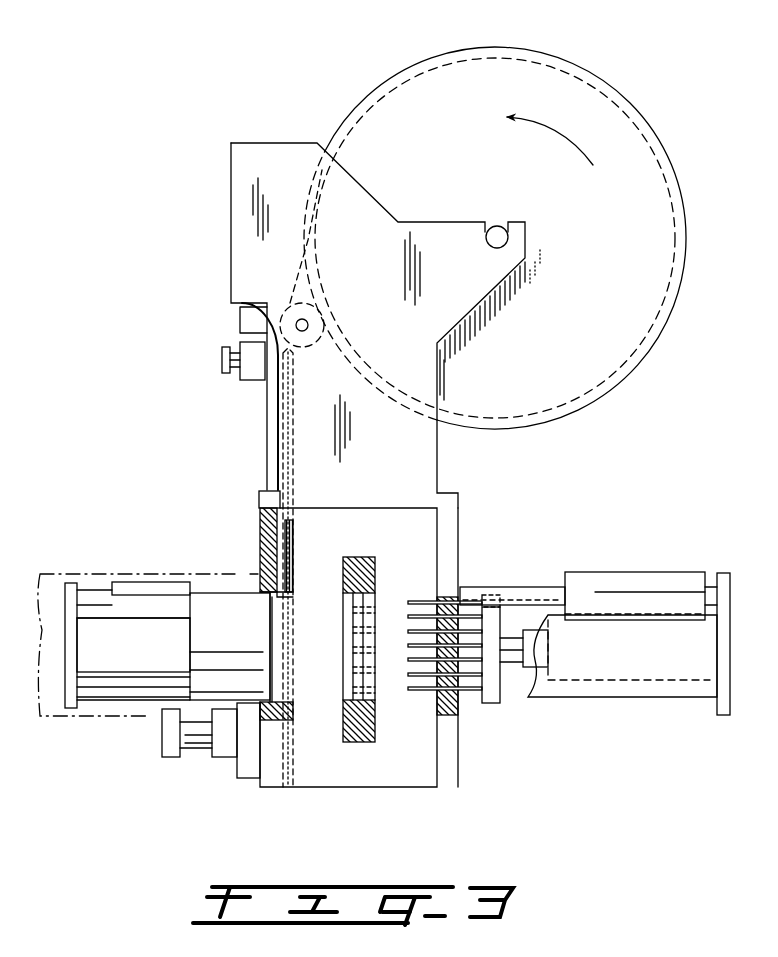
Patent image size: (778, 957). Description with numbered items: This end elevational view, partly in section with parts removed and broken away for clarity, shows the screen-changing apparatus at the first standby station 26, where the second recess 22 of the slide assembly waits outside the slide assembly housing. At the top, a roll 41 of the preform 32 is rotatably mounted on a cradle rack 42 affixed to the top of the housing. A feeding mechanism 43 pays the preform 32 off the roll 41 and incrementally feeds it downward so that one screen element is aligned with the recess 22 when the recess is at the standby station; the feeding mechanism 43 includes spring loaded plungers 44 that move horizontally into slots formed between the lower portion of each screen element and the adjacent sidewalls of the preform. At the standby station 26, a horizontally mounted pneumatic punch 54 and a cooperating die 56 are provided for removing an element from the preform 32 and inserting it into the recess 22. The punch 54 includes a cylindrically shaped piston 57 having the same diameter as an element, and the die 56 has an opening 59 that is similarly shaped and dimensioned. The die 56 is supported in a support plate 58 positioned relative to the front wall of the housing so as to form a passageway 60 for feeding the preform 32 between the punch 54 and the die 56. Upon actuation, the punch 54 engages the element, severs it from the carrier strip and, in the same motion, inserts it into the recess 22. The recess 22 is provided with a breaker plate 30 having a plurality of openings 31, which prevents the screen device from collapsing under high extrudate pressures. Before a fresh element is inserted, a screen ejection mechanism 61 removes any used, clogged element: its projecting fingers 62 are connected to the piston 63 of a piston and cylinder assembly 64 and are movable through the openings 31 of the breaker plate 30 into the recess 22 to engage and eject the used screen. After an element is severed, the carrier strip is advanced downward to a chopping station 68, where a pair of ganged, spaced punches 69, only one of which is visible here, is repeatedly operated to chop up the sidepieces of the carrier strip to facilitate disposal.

The second recess 22 is at (345, 603).
The first standby station 26 is at (465, 542).
The breaker plate 30 is at (375, 610).
The openings 31 is at (375, 655).
The preform 32 is at (288, 292).
The roll 41 is at (568, 56).
The cradle rack 42 is at (478, 296).
The feeding mechanism 43 is at (240, 396).
The spring loaded plungers 44 is at (222, 360).
The pneumatic punch 54 is at (157, 570).
The die 56 is at (292, 578).
The piston 57 is at (234, 600).
The support plate 58 is at (290, 525).
The opening 59 is at (288, 660).
The passageway 60 is at (275, 520).
The screen ejection mechanism 61 is at (612, 568).
The projecting fingers 62 is at (415, 674).
The piston 63 is at (490, 705).
The piston and cylinder assembly 64 is at (650, 698).
The chopping station 68 is at (247, 782).
The ganged punches 69 is at (219, 760).